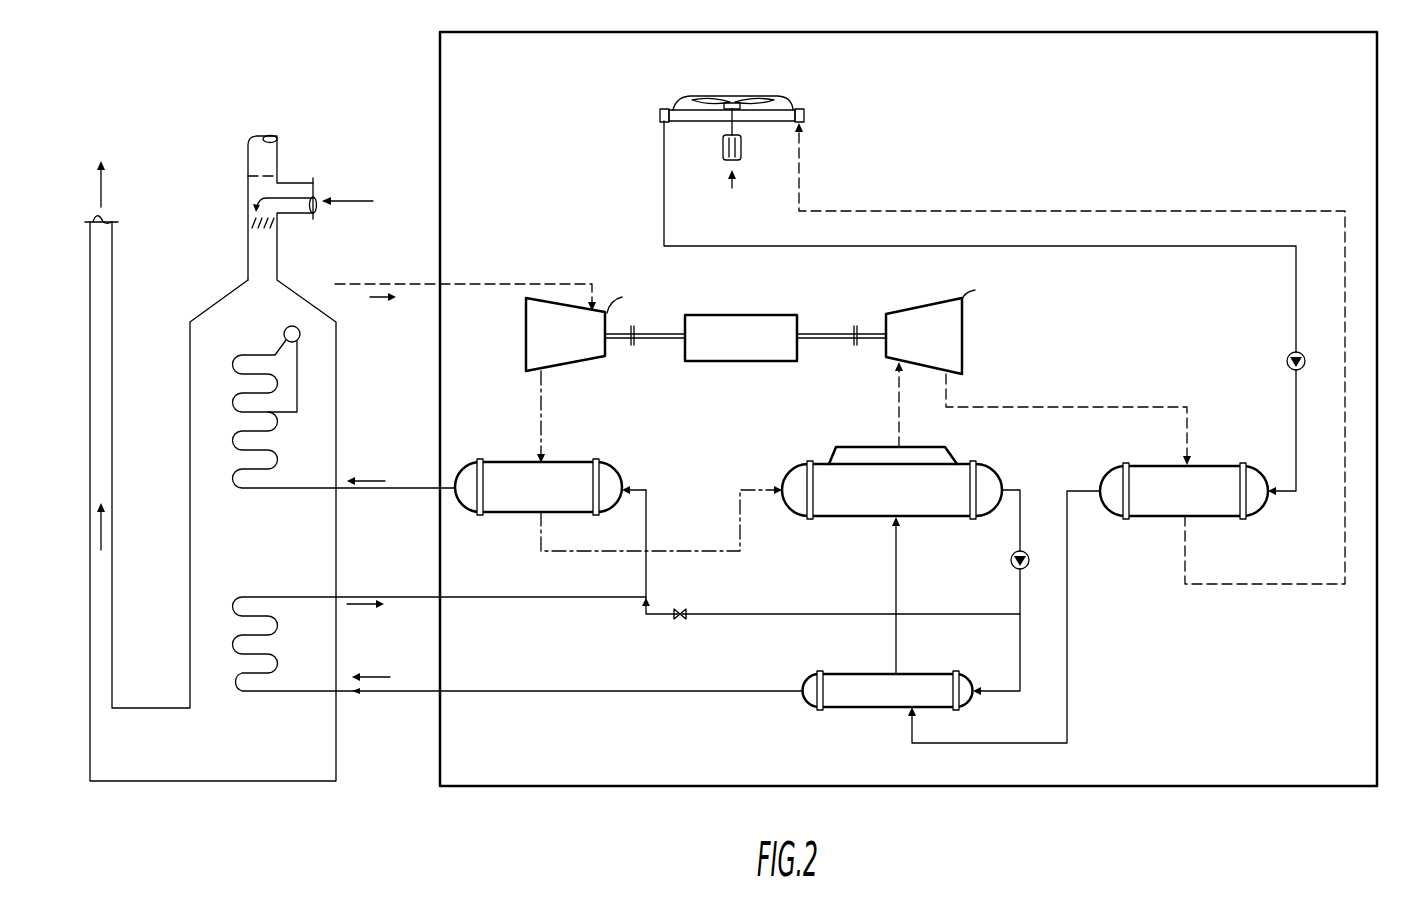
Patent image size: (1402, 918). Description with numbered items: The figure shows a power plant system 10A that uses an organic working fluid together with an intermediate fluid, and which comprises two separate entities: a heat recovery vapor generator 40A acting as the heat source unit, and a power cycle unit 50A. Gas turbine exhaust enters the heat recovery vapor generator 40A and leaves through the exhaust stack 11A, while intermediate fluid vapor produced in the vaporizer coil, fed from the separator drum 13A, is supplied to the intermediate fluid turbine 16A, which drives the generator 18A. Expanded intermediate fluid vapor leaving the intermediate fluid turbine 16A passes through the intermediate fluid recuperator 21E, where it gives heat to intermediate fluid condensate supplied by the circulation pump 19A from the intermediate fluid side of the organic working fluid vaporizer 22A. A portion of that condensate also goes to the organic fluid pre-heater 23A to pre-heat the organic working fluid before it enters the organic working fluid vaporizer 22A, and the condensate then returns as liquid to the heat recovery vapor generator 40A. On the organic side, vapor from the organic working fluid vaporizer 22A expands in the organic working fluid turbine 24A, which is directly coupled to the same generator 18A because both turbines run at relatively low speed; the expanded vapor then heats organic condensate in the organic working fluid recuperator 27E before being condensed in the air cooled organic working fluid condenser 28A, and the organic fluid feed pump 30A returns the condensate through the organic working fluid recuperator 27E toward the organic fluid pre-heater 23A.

The power plant system 10A is at (116, 68).
The HRVG exhaust gas stack 11A is at (118, 231).
The heat source 13A is at (298, 329).
The intermediate fluid turbine 16A is at (526, 370).
The generator 18A is at (797, 358).
The pump 19A is at (1025, 551).
The intermediate fluid recuperator 21E is at (585, 463).
The organic working fluid vaporizer 22A is at (830, 465).
The organic fluid pre-heater 23A is at (918, 675).
The organic working fluid turbine 24A is at (963, 373).
The organic working fluid recuperator 27E is at (1203, 468).
The organic working fluid condenser 28A is at (797, 104).
The organic fluid feed pump 30A is at (1305, 354).
The heat recovery vapor generator 40A is at (342, 780).
The power cycle unit 50A is at (1194, 793).